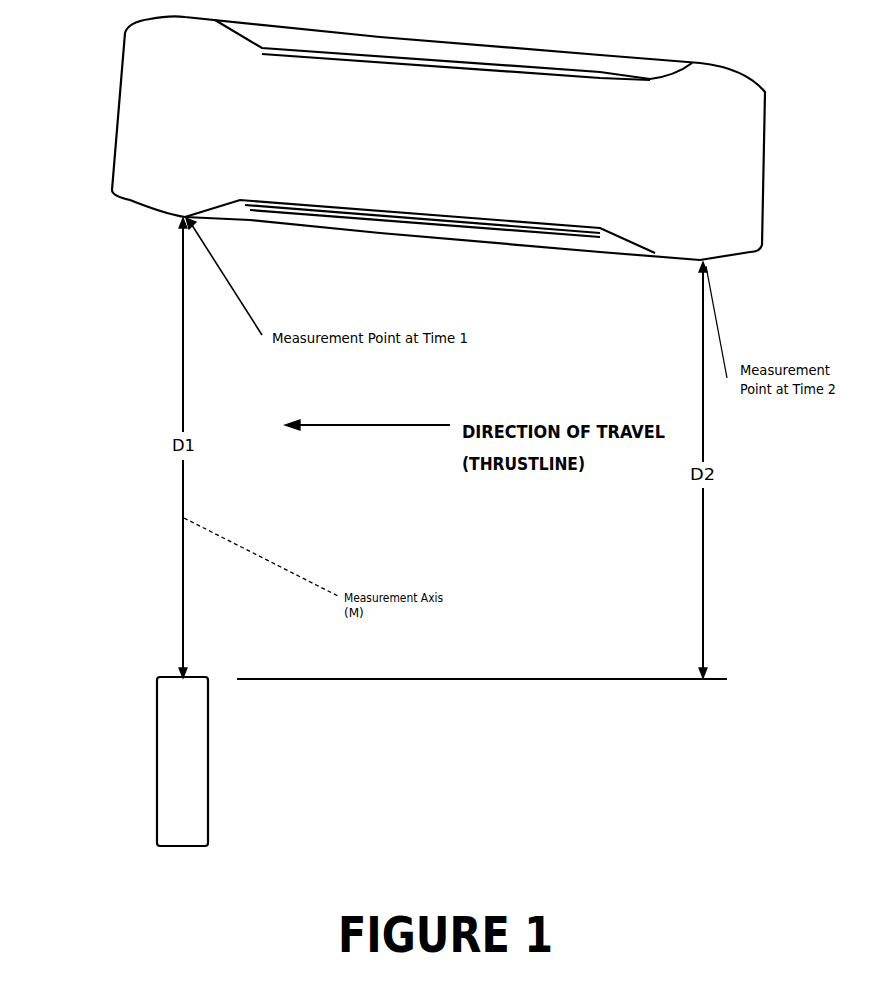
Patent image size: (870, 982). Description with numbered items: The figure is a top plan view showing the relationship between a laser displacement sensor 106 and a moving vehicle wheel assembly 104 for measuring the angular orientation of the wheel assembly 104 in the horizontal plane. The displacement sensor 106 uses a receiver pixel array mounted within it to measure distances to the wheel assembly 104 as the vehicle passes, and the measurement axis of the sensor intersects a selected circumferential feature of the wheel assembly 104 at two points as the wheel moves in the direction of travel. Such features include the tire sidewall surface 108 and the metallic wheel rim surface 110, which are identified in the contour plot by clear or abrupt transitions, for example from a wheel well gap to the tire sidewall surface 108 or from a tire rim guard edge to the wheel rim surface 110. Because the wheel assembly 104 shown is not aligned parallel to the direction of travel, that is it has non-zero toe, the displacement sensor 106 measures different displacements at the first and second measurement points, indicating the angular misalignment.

The vehicle wheel assembly 104 is at (427, 167).
The laser displacement sensor 106 is at (210, 765).
The tire sidewall surface 108 is at (718, 65).
The wheel rim surface 110 is at (507, 65).